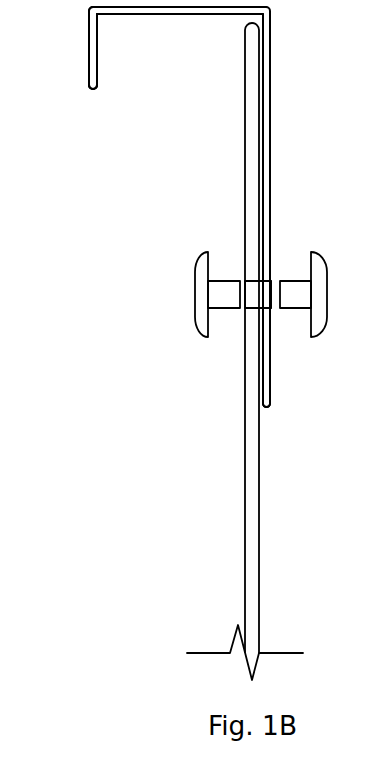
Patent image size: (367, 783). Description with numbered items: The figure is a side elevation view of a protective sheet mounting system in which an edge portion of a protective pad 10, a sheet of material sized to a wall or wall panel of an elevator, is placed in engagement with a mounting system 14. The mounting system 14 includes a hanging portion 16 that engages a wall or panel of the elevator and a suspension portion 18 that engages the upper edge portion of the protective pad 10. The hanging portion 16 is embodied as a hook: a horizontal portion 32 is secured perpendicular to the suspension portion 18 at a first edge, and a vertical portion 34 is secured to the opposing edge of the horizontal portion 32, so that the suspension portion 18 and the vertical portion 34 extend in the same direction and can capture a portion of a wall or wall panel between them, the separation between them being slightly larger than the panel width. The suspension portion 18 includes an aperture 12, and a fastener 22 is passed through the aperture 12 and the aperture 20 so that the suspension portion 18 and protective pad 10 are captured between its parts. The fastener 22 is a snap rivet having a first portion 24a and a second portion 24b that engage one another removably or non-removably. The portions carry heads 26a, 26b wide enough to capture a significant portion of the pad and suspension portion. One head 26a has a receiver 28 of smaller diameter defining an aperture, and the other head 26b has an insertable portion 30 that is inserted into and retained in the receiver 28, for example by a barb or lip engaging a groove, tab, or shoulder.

The protective pad 10 is at (250, 492).
The aperture 12 is at (251, 312).
The mounting system 14 is at (187, 63).
The hanging portion 16 is at (67, 50).
The suspension portion 18 is at (266, 106).
The aperture 20 is at (268, 312).
The fastener 22 is at (232, 281).
The first portion 24a is at (201, 276).
The second portion 24b is at (320, 278).
The head 26a is at (198, 273).
The head 26b is at (320, 273).
The receiver 28 is at (224, 291).
The insertable portion 30 is at (303, 292).
The horizontal portion 32 is at (190, 14).
The vertical portion 34 is at (95, 66).